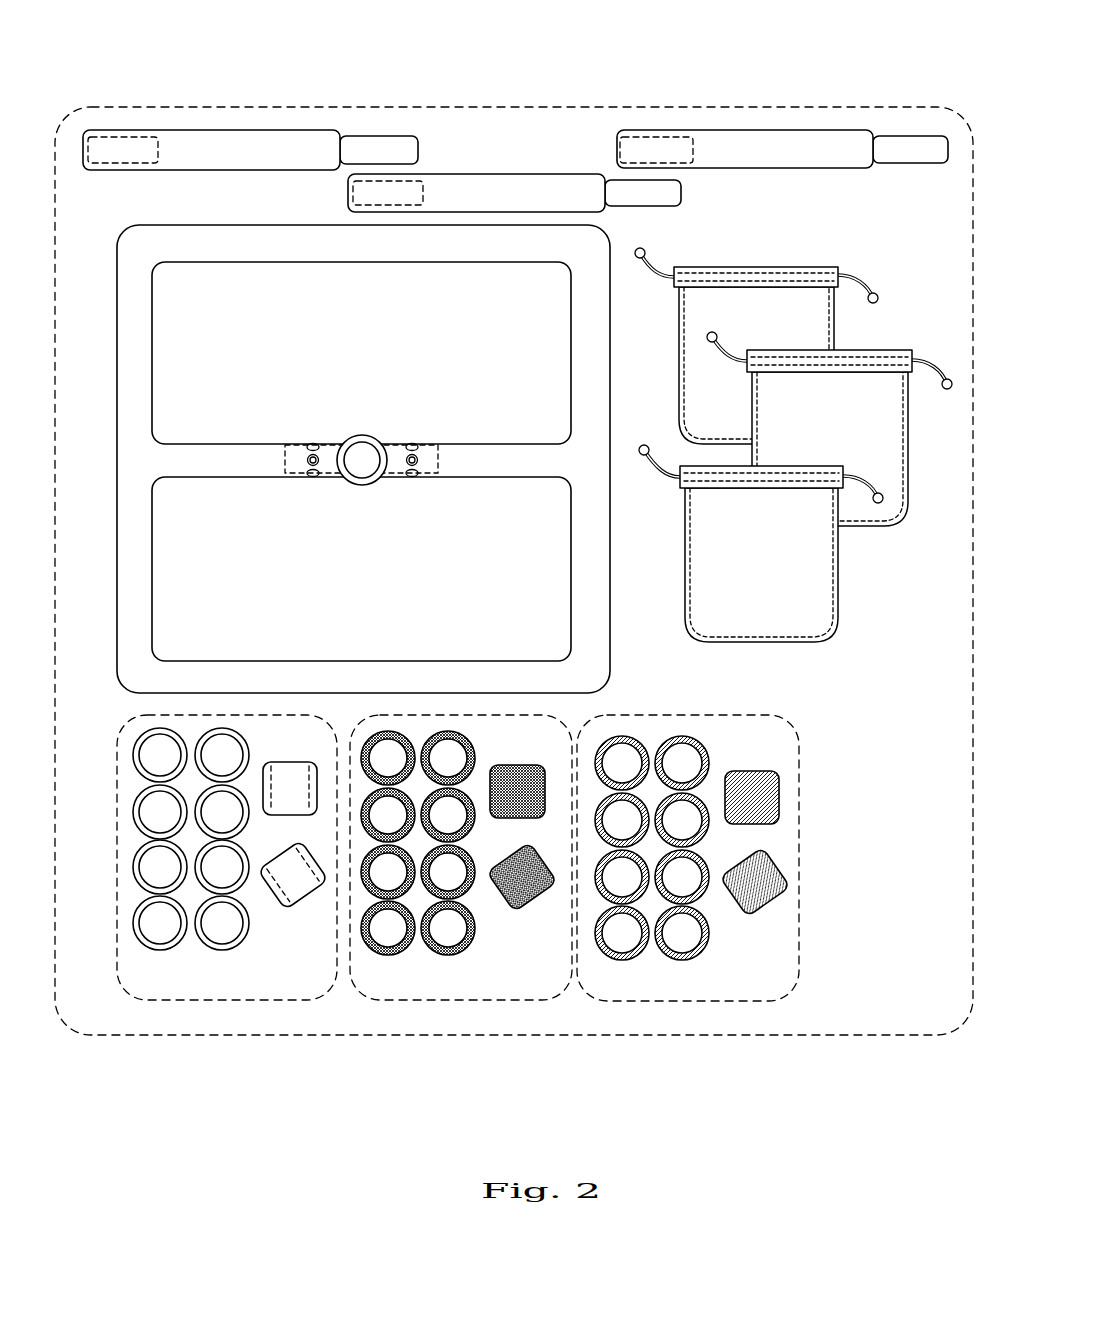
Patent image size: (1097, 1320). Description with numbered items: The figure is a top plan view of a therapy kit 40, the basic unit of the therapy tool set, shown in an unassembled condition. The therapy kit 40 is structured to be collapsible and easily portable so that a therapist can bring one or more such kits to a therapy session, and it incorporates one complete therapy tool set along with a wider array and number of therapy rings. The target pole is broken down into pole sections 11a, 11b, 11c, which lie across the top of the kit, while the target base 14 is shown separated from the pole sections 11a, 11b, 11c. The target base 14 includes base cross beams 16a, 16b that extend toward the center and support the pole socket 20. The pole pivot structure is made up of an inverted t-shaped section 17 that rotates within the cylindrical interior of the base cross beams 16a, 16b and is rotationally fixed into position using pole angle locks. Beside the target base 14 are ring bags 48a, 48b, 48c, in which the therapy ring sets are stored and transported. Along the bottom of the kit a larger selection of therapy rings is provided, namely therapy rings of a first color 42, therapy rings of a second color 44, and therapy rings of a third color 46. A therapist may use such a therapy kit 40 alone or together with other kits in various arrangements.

The therapy kit 40 is at (705, 107).
The pole section 11a is at (193, 130).
The pole section 11b is at (485, 172).
The pole section 11c is at (815, 130).
The target base 14 is at (355, 661).
The base cross beam 16a is at (218, 478).
The base cross beam 16b is at (503, 441).
The inverted t-shaped section 17 is at (422, 478).
The pole socket 20 is at (362, 436).
The ring bag 48a is at (785, 266).
The ring bag 48b is at (860, 526).
The ring bag 48c is at (843, 601).
The therapy rings of a first color 42 is at (232, 1007).
The therapy rings of a second color 44 is at (459, 1007).
The therapy rings of a third color 46 is at (690, 1007).